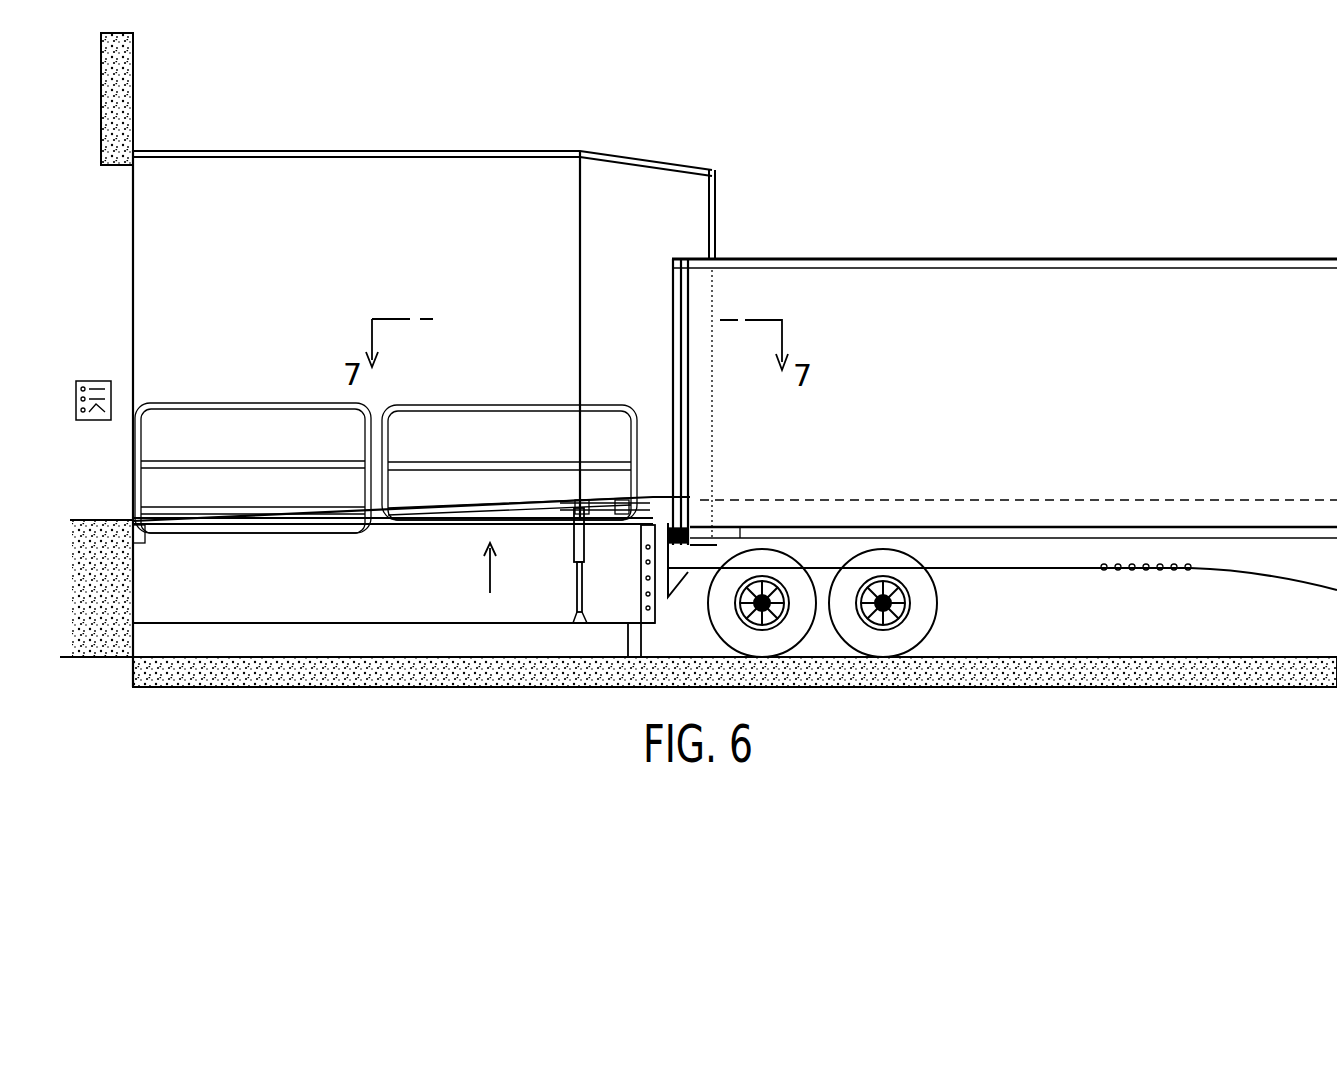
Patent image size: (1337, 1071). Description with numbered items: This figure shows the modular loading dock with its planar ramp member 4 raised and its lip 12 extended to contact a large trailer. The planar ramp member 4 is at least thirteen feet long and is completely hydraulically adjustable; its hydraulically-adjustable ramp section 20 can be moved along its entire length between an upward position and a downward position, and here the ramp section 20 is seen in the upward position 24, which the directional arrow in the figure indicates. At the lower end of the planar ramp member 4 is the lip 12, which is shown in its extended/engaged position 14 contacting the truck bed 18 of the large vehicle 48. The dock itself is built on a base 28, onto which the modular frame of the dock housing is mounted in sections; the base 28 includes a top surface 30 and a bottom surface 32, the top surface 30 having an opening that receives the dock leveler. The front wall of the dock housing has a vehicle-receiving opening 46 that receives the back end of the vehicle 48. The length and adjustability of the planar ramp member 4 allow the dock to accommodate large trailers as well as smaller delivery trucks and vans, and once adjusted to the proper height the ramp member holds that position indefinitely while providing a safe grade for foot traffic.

The planar ramp member 4 is at (342, 525).
The lip 12 is at (817, 367).
The extended/engaged position 14 is at (660, 493).
The truck bed 18 is at (698, 497).
The hydraulically-adjustable ramp section 20 is at (553, 678).
The upward position 24 is at (537, 515).
The base 28 is at (230, 597).
The top surface 30 is at (442, 525).
The bottom surface 32 is at (188, 623).
The vehicle-receiving opening 46 is at (650, 213).
The vehicle 48 is at (990, 290).